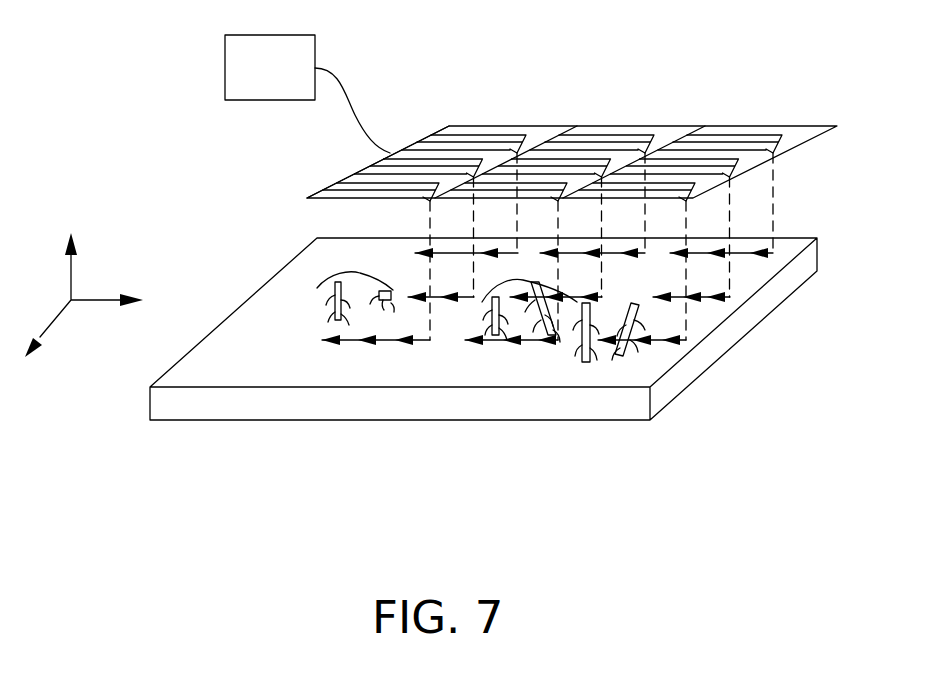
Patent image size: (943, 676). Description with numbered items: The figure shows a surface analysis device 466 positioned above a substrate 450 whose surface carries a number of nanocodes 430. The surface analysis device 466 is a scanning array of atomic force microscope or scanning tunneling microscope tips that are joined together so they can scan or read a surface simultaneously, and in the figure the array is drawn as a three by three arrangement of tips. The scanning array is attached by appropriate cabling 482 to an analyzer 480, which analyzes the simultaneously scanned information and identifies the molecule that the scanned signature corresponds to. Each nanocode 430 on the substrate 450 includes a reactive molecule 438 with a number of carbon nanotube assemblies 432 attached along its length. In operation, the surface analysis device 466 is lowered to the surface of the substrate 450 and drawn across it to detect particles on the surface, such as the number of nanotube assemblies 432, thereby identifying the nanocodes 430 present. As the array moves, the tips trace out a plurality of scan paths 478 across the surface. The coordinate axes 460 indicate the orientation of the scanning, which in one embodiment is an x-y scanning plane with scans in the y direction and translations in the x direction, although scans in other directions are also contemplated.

The nanocodes 430 is at (350, 268).
The carbon nanotube assemblies 432 is at (586, 362).
The reactive molecule 438 is at (312, 292).
The substrate 450 is at (477, 405).
The coordinate axes 460 is at (73, 320).
The surface analysis device 466 is at (652, 121).
The scan paths 478 is at (654, 345).
The analyzer 480 is at (295, 79).
The cabling 482 is at (352, 105).